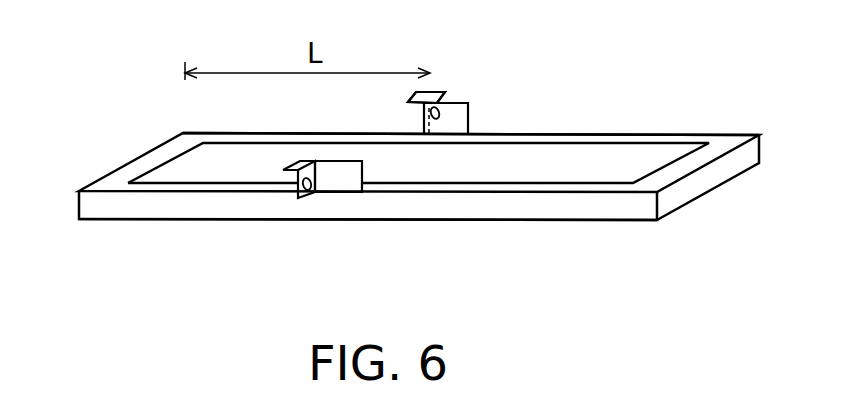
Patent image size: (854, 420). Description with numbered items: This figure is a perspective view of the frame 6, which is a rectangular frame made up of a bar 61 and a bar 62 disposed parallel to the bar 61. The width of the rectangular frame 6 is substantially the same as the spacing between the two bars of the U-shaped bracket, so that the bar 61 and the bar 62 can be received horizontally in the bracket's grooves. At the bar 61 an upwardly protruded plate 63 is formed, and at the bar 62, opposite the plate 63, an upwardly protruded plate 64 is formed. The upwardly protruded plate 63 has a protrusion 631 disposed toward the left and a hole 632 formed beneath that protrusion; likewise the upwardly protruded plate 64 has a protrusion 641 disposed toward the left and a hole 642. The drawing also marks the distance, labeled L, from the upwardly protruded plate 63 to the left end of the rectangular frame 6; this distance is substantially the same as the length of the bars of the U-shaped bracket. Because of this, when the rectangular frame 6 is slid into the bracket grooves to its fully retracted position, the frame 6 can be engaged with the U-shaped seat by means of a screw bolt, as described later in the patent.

The frame 6 is at (517, 261).
The bar 61 is at (603, 138).
The bar 62 is at (603, 220).
The upwardly protruded plate 63 is at (445, 98).
The protrusion 631 is at (430, 92).
The hole 632 is at (440, 113).
The upwardly protruded plate 64 is at (292, 188).
The protrusion 641 is at (290, 171).
The hole 642 is at (307, 194).